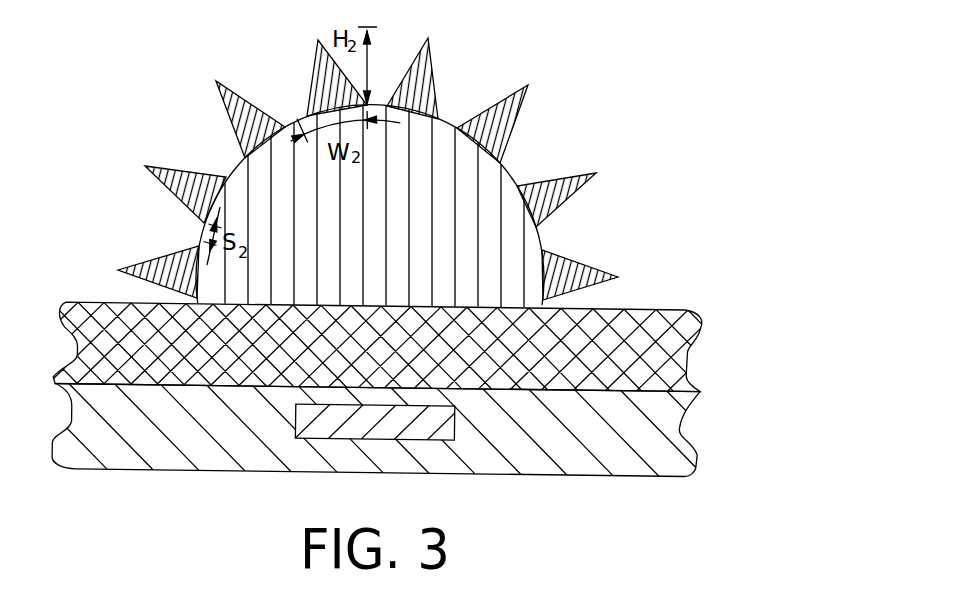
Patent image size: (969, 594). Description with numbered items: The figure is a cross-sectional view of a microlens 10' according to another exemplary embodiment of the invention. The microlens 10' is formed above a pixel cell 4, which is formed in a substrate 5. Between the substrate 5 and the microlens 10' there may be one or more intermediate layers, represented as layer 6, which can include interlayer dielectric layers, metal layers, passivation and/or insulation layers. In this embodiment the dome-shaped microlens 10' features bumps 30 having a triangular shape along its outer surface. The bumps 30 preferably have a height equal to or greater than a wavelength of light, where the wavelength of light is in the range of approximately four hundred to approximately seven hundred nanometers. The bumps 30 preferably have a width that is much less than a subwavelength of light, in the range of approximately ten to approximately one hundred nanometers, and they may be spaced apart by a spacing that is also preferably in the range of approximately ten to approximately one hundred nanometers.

The pixel cell 4 is at (403, 439).
The substrate 5 is at (660, 433).
The intermediate layer 6 is at (662, 336).
The microlens 10' is at (453, 206).
The bumps 30 is at (518, 106).